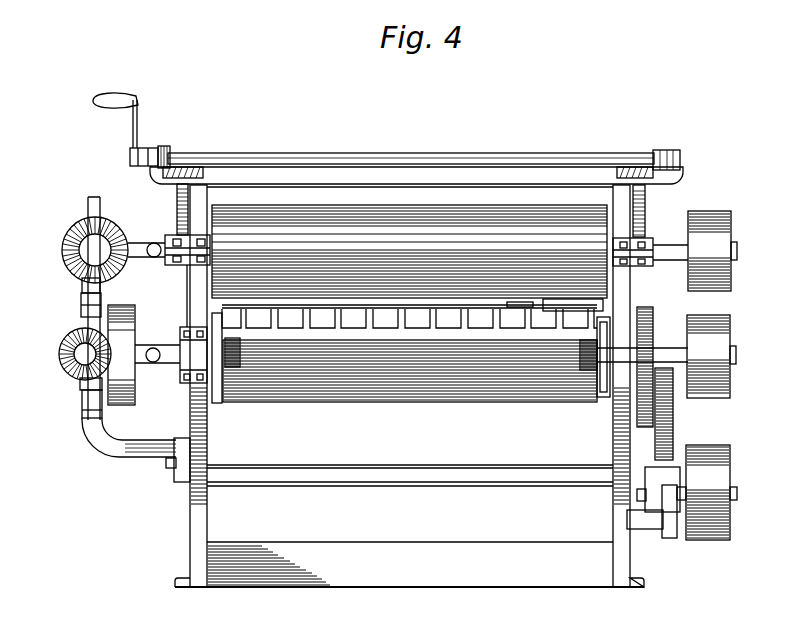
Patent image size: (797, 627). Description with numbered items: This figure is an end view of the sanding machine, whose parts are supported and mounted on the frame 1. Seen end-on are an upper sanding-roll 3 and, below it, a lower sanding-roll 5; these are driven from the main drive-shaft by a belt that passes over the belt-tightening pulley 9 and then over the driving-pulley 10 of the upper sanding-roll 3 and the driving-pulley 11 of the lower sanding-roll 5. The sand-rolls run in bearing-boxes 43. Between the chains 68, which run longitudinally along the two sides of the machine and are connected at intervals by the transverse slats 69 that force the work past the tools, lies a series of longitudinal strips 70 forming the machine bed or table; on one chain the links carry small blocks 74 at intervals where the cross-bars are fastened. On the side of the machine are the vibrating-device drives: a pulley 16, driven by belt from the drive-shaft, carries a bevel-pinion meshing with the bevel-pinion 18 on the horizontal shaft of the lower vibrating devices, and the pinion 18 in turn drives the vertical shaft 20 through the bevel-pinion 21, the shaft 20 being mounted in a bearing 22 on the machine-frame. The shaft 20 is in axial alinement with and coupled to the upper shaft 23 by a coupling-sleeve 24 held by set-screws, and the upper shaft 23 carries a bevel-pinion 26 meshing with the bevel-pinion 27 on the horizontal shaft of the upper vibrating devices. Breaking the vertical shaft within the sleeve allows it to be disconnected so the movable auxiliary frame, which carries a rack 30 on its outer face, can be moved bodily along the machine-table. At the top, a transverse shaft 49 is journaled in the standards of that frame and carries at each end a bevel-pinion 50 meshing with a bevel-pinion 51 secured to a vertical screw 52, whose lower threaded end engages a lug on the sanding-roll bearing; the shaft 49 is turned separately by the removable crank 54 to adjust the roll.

The frame 1 is at (207, 517).
The upper sanding-roll 3 is at (409, 251).
The lower sanding-roll 5 is at (395, 388).
The belt-tightening pulley 9 is at (712, 544).
The driving-pulley 10 is at (731, 271).
The driving-pulley 11 is at (730, 378).
The pulley 16 is at (135, 395).
The bevel-pinion 18 is at (59, 355).
The vertical shaft 20 is at (85, 427).
The bevel-pinion 21 is at (78, 385).
The bearing 22 is at (103, 412).
The upper shaft 23 is at (106, 209).
The coupling-sleeve 24 is at (80, 320).
The bevel-pinion 26 is at (70, 275).
The bevel-pinion 27 is at (62, 250).
The rack 30 is at (187, 288).
The bearing-box 43 is at (183, 266).
The transverse shaft 49 is at (420, 154).
The bevel-pinion 50 is at (172, 146).
The bevel-pinion 51 is at (204, 170).
The vertical screw 52 is at (177, 216).
The crank 54 is at (140, 108).
The chain 68 is at (217, 403).
The transverse slat 69 is at (570, 300).
The longitudinal strip 70 is at (352, 322).
The block 74 is at (653, 318).